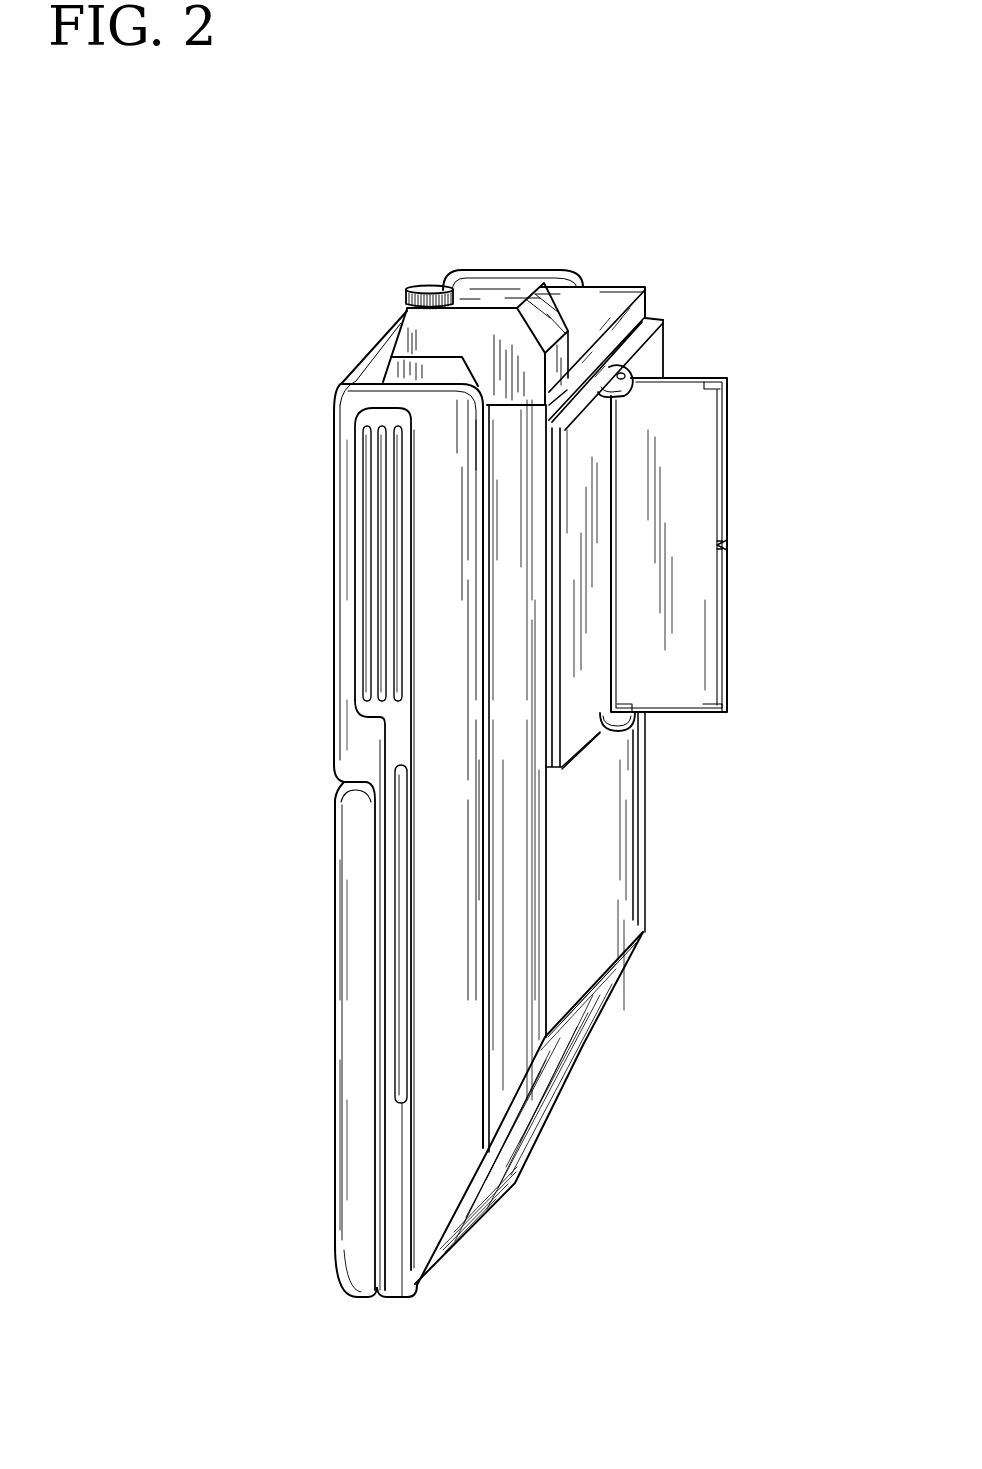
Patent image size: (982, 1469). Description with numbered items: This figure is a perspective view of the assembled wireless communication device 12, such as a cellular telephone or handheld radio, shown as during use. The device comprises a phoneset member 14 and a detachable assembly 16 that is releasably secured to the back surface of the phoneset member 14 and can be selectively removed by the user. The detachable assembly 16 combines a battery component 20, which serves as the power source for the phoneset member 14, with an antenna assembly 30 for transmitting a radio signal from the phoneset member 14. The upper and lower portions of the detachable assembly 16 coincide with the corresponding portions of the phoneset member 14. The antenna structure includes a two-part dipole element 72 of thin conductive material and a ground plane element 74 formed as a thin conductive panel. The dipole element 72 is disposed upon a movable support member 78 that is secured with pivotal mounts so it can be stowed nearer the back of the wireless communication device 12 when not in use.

The wireless communication device 12 is at (678, 222).
The phoneset member 14 is at (432, 1120).
The detachable assembly 16 is at (613, 822).
The battery component 20 is at (588, 895).
The antenna assembly 30 is at (701, 533).
The dipole element 72 is at (725, 515).
The ground plane element 74 is at (562, 767).
The movable support member 78 is at (675, 400).